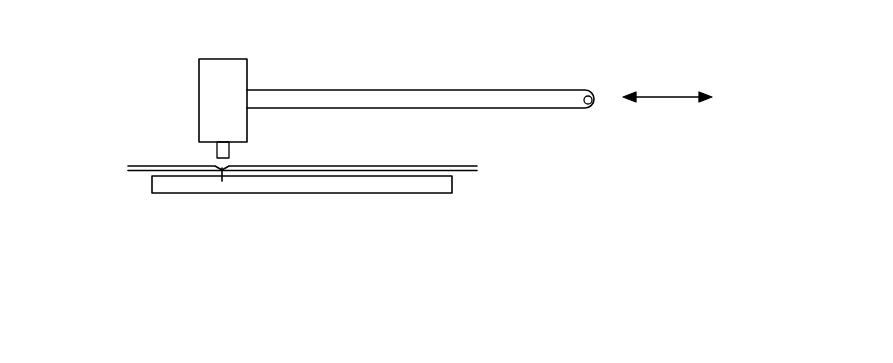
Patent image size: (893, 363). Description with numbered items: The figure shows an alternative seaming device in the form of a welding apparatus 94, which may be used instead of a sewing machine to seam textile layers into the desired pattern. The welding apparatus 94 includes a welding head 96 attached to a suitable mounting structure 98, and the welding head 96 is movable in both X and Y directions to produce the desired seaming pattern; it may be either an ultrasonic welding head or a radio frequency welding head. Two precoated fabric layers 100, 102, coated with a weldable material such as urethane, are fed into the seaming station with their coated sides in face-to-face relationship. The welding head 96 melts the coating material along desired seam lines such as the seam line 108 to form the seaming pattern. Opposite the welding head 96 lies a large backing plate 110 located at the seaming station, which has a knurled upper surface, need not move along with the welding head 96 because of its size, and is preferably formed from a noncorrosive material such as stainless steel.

The welding apparatus 94 is at (290, 62).
The welding head 96 is at (199, 92).
The mounting structure 98 is at (512, 90).
The precoated fabric layer 100 is at (138, 166).
The precoated fabric layer 102 is at (138, 173).
The seam line 108 is at (223, 180).
The backing plate 110 is at (198, 193).